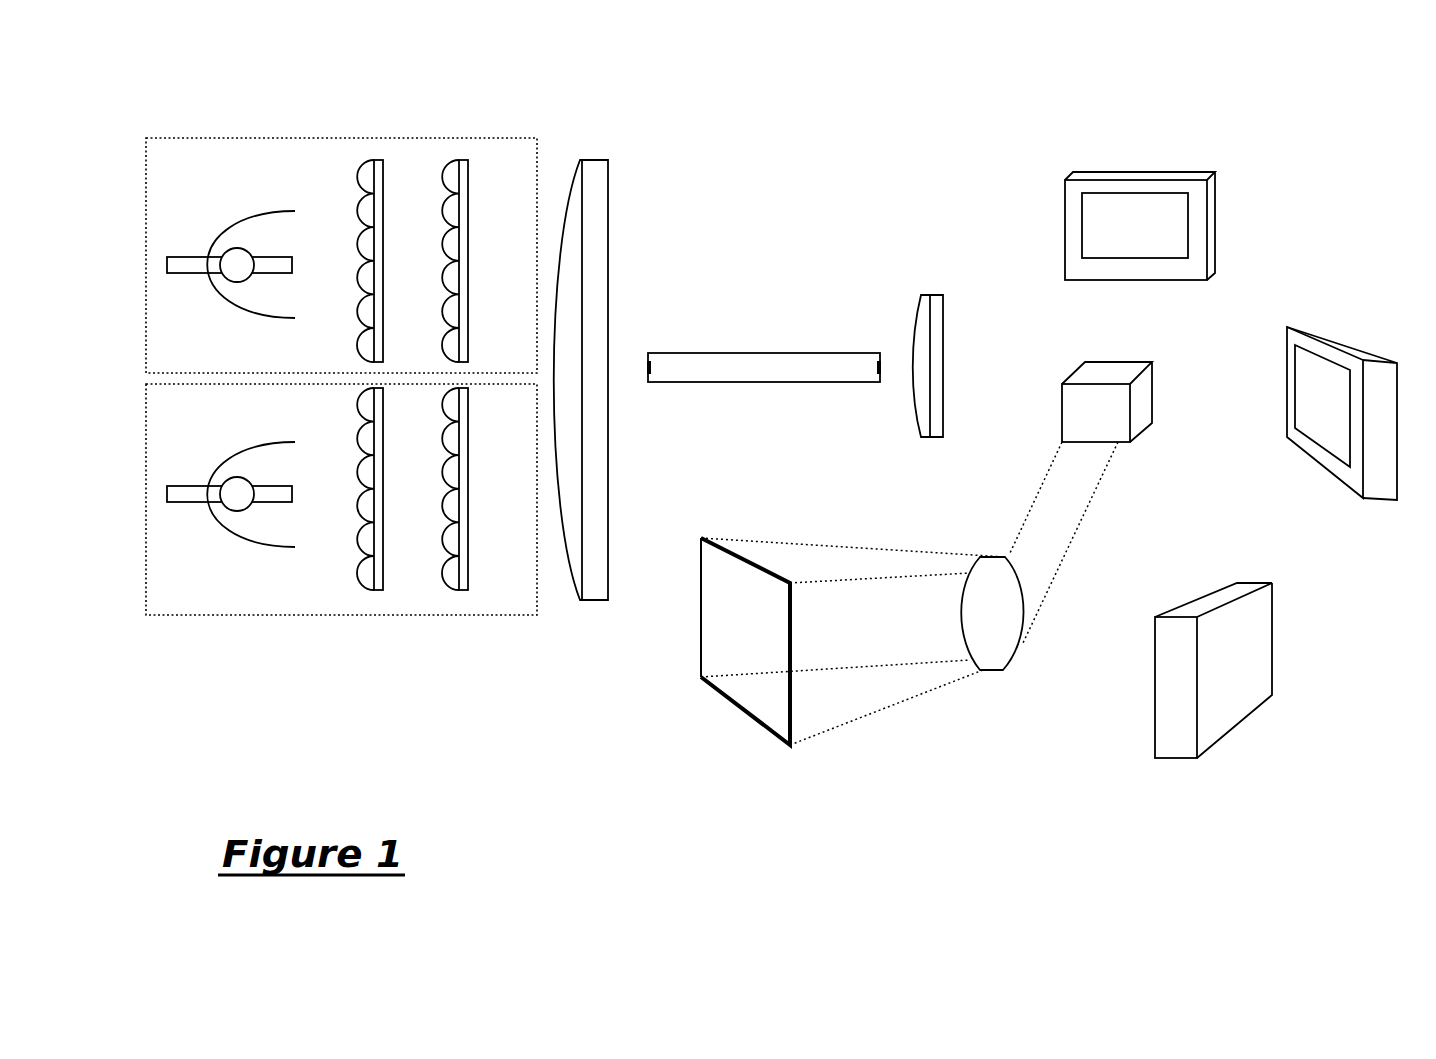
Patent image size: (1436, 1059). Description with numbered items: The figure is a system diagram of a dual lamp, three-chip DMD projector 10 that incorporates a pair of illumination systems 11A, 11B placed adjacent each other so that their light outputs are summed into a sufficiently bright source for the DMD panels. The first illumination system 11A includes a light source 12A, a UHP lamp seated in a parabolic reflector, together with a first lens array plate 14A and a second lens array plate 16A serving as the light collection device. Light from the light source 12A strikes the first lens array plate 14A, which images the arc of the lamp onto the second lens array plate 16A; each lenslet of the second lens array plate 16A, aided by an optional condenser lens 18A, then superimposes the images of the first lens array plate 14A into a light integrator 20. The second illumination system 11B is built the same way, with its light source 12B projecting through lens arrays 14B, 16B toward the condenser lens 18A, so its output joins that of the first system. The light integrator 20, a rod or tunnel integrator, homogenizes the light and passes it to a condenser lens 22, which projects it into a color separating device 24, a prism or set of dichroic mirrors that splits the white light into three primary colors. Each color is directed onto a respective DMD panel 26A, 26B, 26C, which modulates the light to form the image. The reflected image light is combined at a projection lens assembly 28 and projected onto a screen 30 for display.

The DMD projector 10 is at (975, 122).
The illumination system 11A is at (328, 138).
The second illumination system 11B is at (335, 615).
The light source 12A is at (242, 308).
The light source 12B is at (247, 543).
The first lens array plate 14A is at (383, 332).
The lens array 14B is at (383, 568).
The second lens array plate 16A is at (468, 332).
The lens array 16B is at (468, 568).
The condenser lens 18A is at (596, 600).
The light integrator 20 is at (742, 382).
The condenser lens 22 is at (935, 437).
The color separating device 24 is at (1133, 440).
The DMD panel 26A is at (1168, 280).
The DMD panel 26B is at (1380, 500).
The DMD panel 26C is at (1272, 695).
The projection lens assembly 28 is at (983, 672).
The screen 30 is at (733, 698).